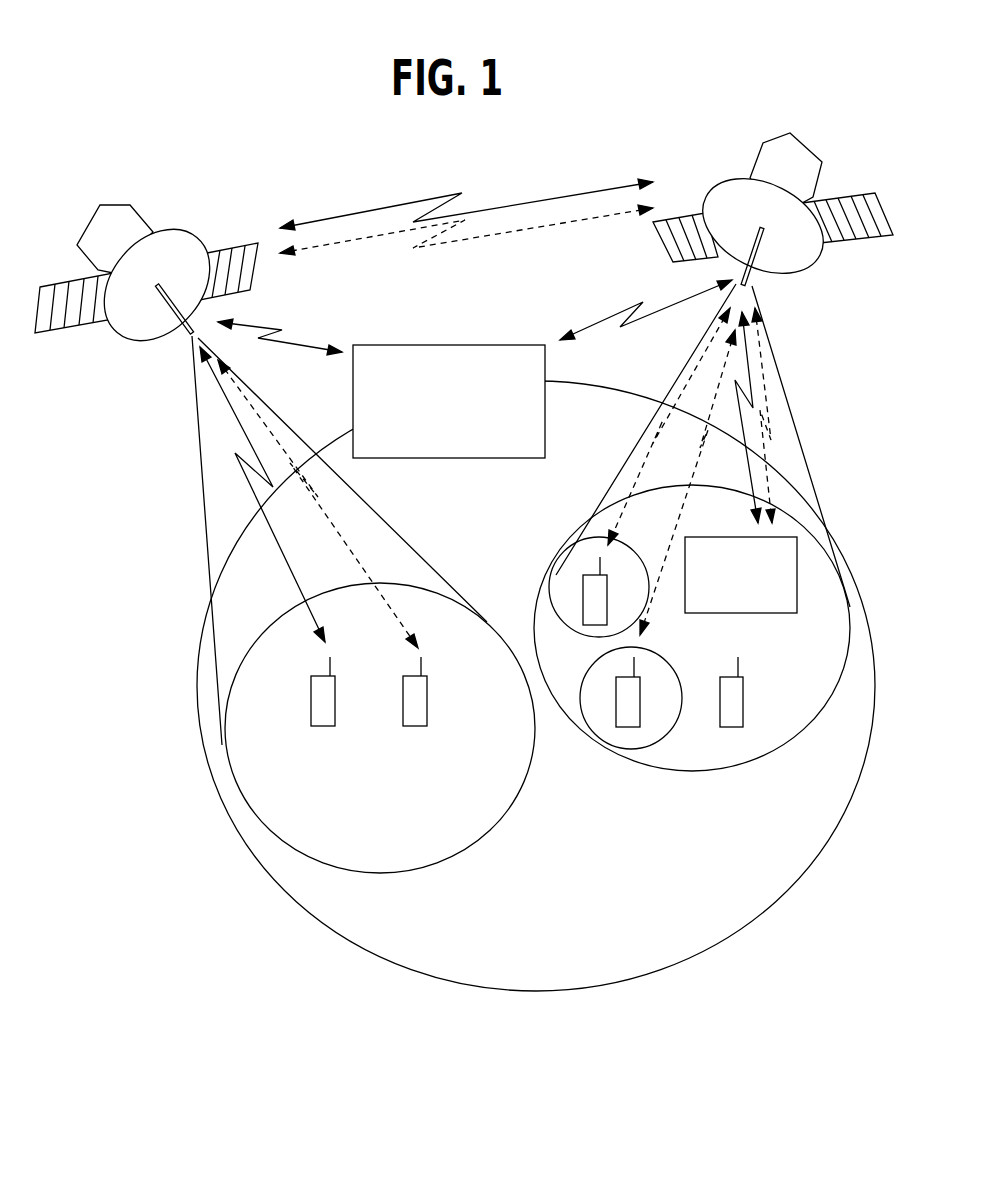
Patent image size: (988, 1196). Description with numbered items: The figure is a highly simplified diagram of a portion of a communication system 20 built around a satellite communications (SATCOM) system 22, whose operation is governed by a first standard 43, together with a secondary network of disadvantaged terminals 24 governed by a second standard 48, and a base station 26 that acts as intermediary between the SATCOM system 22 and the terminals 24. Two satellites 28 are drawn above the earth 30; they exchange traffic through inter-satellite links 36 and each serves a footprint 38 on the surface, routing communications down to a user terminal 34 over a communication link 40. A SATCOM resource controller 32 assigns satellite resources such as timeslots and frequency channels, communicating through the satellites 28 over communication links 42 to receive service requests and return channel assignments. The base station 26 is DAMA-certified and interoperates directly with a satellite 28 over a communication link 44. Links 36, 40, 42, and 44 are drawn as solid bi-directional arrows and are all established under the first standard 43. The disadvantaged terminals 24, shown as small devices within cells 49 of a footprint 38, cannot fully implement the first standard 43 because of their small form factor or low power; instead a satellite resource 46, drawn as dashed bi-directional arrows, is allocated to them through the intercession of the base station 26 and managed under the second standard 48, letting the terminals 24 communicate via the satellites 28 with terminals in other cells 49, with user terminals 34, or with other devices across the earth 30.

The communication system 20 is at (266, 1039).
The satellite communications (SATCOM) system 22 is at (78, 152).
The disadvantaged terminals 24 is at (425, 717).
The base station 26 is at (797, 605).
The satellite 28 is at (108, 207).
The earth 30 is at (553, 954).
The SATCOM resource controller 32 is at (410, 345).
The user terminal 34 is at (315, 697).
The inter-satellite links 36 is at (373, 208).
The footprint 38 is at (240, 797).
The communication link 40 is at (278, 543).
The communication links 42 is at (258, 323).
The first standard 43 is at (530, 190).
The communication link 44 is at (750, 450).
The satellite resource 46 is at (350, 247).
The second standard 48 is at (508, 240).
The cells 49 is at (590, 540).